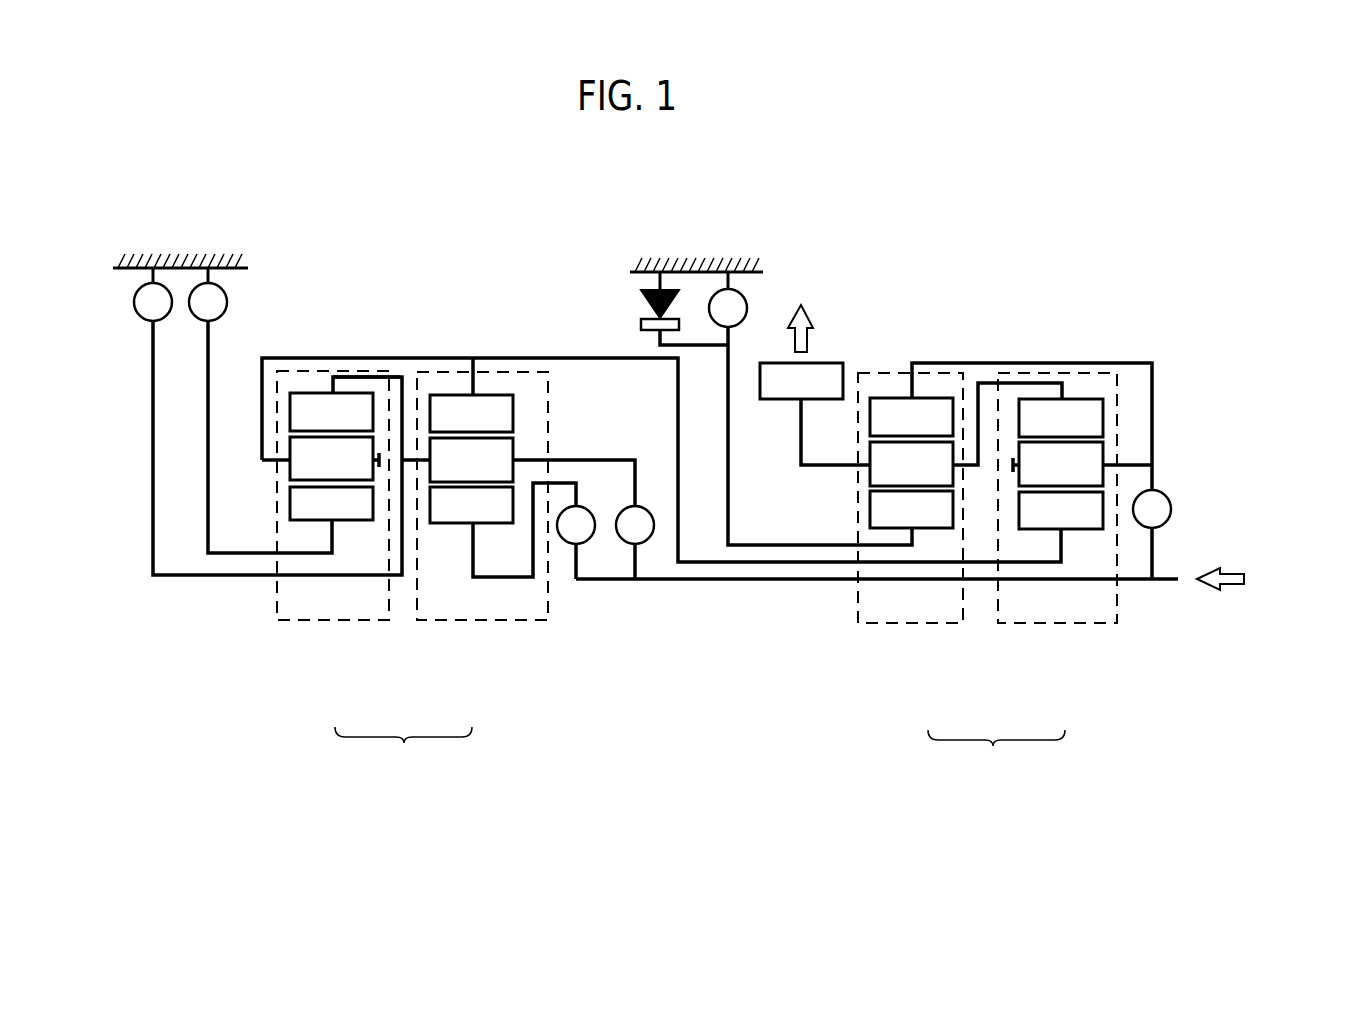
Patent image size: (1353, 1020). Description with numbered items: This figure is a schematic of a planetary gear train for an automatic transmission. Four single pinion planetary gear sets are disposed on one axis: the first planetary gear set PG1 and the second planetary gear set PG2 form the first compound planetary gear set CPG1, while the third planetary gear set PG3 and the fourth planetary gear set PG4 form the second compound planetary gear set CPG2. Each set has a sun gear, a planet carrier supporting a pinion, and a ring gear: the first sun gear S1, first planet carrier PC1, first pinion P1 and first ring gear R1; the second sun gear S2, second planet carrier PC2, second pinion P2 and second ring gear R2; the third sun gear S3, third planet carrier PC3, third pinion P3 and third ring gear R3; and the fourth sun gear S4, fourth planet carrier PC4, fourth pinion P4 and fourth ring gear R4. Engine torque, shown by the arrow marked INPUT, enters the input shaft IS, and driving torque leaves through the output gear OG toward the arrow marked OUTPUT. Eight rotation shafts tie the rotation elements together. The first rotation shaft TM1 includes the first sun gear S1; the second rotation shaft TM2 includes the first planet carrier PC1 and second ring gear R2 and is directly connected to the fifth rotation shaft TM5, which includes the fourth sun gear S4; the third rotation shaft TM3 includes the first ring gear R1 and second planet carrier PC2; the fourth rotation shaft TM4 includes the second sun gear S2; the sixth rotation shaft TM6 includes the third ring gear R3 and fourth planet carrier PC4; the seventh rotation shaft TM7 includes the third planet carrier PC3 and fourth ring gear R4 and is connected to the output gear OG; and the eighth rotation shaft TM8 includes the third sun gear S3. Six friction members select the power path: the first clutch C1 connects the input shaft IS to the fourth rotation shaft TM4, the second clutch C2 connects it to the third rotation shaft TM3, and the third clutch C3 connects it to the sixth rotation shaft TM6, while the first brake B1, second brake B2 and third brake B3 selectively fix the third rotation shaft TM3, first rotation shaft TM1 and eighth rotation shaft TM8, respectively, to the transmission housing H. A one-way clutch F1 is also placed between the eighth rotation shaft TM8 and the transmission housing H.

The transmission housing H is at (185, 254).
The first brake B1 is at (153, 294).
The second brake B2 is at (260, 410).
The third brake B3 is at (728, 299).
The one-way clutch F1 is at (670, 308).
The first clutch C1 is at (576, 542).
The second clutch C2 is at (635, 542).
The third clutch C3 is at (1152, 509).
The first rotation shaft TM1 is at (229, 556).
The second rotation shaft TM2 is at (411, 356).
The third rotation shaft TM3 is at (357, 375).
The fourth rotation shaft TM4 is at (474, 548).
The fifth rotation shaft TM5 is at (736, 566).
The sixth rotation shaft TM6 is at (1080, 362).
The seventh rotation shaft TM7 is at (1017, 382).
The eighth rotation shaft TM8 is at (757, 544).
The first planet carrier PC1 is at (271, 462).
The second planet carrier PC2 is at (530, 457).
The third planet carrier PC3 is at (836, 468).
The fourth planet carrier PC4 is at (1133, 463).
The first ring gear R1 is at (331, 412).
The second ring gear R2 is at (471, 413).
The third ring gear R3 is at (911, 417).
The fourth ring gear R4 is at (1061, 418).
The first pinion P1 is at (331, 458).
The second pinion P2 is at (471, 460).
The third pinion P3 is at (911, 464).
The fourth pinion P4 is at (1061, 464).
The first sun gear S1 is at (331, 503).
The second sun gear S2 is at (471, 505).
The third sun gear S3 is at (911, 509).
The fourth sun gear S4 is at (1061, 510).
The first planetary gear set PG1 is at (333, 547).
The second planetary gear set PG2 is at (482, 547).
The third planetary gear set PG3 is at (910, 549).
The fourth planetary gear set PG4 is at (1057, 549).
The first compound planetary gear set CPG1 is at (403, 753).
The second compound planetary gear set CPG2 is at (996, 756).
The output gear OG is at (801, 381).
The input shaft IS is at (798, 584).
The input INPUT is at (1252, 579).
The output OUTPUT is at (806, 312).